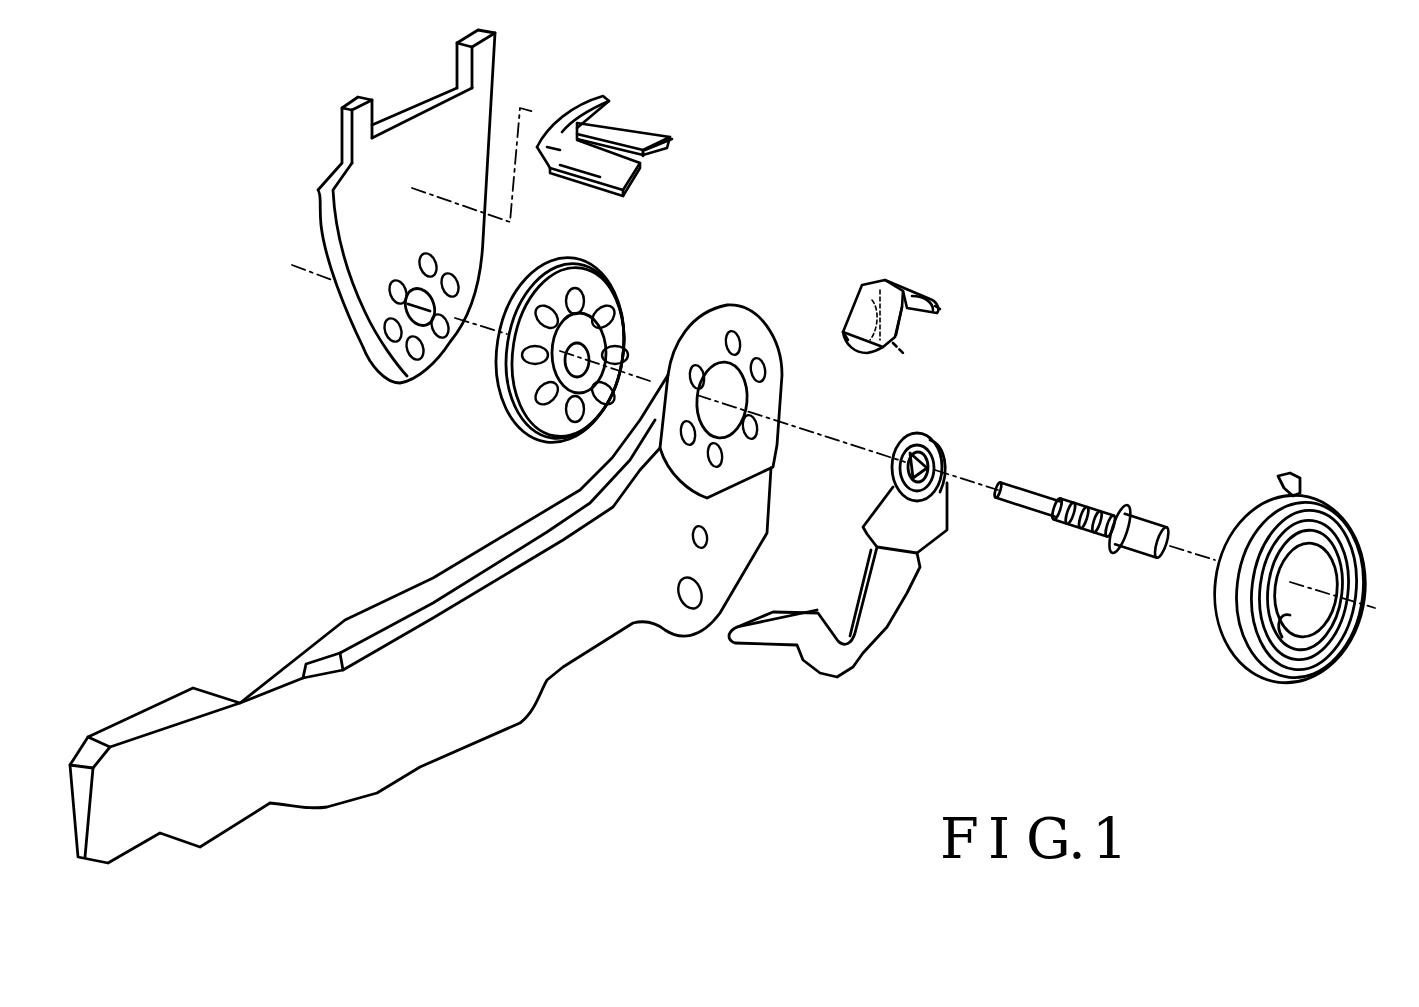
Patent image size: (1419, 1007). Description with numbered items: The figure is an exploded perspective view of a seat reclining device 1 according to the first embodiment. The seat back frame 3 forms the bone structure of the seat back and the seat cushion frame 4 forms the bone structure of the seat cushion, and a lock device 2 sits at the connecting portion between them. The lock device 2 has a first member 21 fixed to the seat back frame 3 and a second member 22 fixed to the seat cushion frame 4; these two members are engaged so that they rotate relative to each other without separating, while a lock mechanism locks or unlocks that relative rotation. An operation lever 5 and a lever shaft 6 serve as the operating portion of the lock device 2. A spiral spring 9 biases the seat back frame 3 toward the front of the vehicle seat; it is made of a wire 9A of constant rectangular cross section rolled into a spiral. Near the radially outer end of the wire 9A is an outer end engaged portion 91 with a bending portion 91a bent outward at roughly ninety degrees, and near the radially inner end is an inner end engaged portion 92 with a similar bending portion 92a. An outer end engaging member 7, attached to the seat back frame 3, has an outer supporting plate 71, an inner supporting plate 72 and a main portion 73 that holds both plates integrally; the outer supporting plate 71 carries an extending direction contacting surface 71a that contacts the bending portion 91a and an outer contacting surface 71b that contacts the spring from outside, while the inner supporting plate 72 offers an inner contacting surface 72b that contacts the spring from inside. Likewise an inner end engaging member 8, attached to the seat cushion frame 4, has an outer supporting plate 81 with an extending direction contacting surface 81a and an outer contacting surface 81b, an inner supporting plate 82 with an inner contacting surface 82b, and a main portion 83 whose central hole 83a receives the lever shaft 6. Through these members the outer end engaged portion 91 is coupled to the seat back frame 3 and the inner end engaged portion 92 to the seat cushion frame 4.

The seat reclining device 1 is at (1058, 124).
The lock device 2 is at (551, 369).
The first member 21 is at (503, 370).
The second member 22 is at (610, 303).
The seat back frame 3 is at (343, 300).
The seat cushion frame 4 is at (513, 710).
The operation lever 5 is at (855, 657).
The lever shaft 6 is at (1068, 498).
The outer end engaging member 7 is at (600, 90).
The outer supporting plate 71 is at (623, 130).
The extending direction contacting surface 71a is at (653, 136).
The outer contacting surface 71b is at (650, 152).
The inner supporting plate 72 is at (630, 172).
The inner contacting surface 72b is at (590, 164).
The main portion 73 is at (574, 118).
The inner end engaging member 8 is at (880, 272).
The outer supporting plate 81 is at (857, 310).
The extending direction contacting surface 81a is at (845, 350).
The outer contacting surface 81b is at (900, 337).
The inner supporting plate 82 is at (940, 303).
The inner contacting surface 82b is at (903, 298).
The main portion 83 is at (875, 355).
The hole 83a is at (905, 355).
The spiral spring 9 is at (1251, 593).
The wire 9A is at (1213, 620).
The outer end engaged portion 91 is at (1262, 502).
The bending portion 91a is at (1283, 470).
The inner end engaged portion 92 is at (1292, 633).
The bending portion 92a is at (1288, 640).